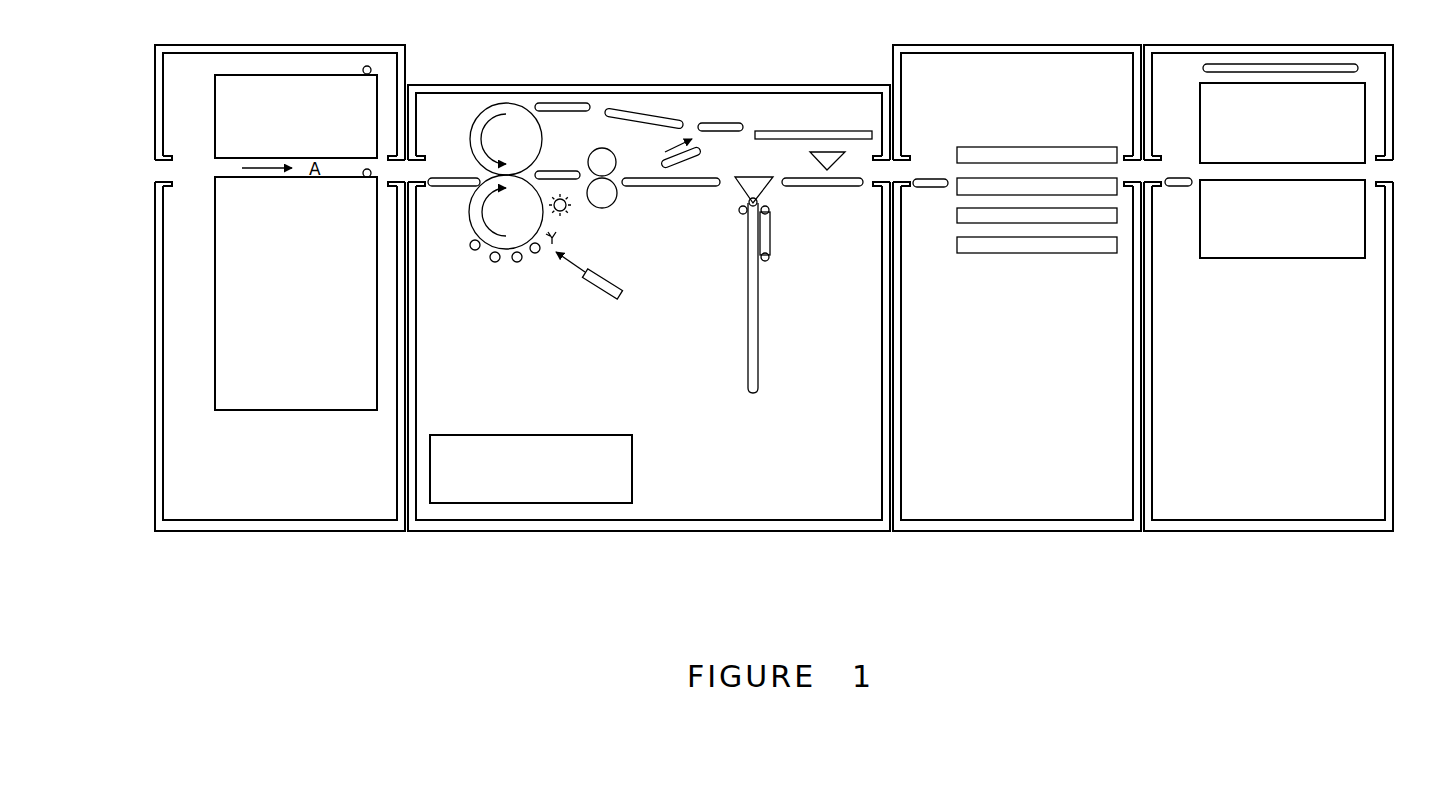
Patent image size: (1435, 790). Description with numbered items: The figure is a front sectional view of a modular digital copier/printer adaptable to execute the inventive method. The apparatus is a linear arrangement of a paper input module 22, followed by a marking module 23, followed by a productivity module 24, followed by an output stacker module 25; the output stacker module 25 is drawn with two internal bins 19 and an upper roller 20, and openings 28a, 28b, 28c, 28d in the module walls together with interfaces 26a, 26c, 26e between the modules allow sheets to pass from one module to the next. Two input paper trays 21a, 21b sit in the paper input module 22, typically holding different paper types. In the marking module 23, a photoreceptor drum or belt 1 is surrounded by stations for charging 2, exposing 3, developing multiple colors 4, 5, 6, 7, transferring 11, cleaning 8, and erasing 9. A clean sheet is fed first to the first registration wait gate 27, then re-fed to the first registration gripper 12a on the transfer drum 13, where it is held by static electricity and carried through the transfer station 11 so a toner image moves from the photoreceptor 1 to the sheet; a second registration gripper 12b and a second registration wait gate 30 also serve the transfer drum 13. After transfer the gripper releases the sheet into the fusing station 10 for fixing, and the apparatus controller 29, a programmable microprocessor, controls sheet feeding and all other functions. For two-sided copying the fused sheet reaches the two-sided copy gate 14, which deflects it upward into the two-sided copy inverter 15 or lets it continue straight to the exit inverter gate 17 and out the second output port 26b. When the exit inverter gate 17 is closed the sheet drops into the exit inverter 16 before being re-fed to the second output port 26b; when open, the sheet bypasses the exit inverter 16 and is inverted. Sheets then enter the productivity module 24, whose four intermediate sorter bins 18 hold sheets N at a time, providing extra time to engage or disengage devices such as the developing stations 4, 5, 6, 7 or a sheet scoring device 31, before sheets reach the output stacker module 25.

The photoreceptor drum or belt 1 is at (514, 223).
The charging station 2 is at (558, 240).
The exposing station 3 is at (620, 286).
The developing station 4 is at (536, 260).
The developing station 5 is at (516, 269).
The developing station 6 is at (493, 269).
The developing station 7 is at (470, 257).
The cleaning station 8 is at (570, 208).
The erasing station 9 is at (562, 225).
The fusing station 10 is at (611, 171).
The transfer station 11 is at (512, 175).
The first registration gripper 12a is at (525, 166).
The second registration gripper 12b is at (484, 118).
The transfer drum 13 is at (517, 149).
The two-sided copy gate 14 is at (639, 174).
The two-sided copy inverter 15 is at (795, 130).
The exit inverter 16 is at (760, 323).
The exit inverter gate 17 is at (792, 167).
The intermediate sorter bins 18 is at (1055, 147).
The finisher bins 19 is at (1294, 135).
The transport roller 20 is at (1203, 68).
The input paper tray 21a is at (312, 133).
The input paper tray 21b is at (312, 330).
The paper input module 22 is at (320, 532).
The marking module 23 is at (707, 532).
The productivity module 24 is at (1058, 532).
The output stacker module 25 is at (1313, 532).
The module interface 26a is at (390, 173).
The second output port 26b is at (874, 172).
The module interface 26c is at (1123, 170).
The module interface 26e is at (1386, 171).
The first registration wait gate 27 is at (462, 187).
The sheet opening 28a is at (166, 175).
The sheet opening 28b is at (414, 171).
The sheet opening 28c is at (908, 170).
The sheet opening 28d is at (1153, 170).
The apparatus controller 29 is at (541, 477).
The second registration wait gate 30 is at (540, 103).
The sheet scoring device 31 is at (830, 152).